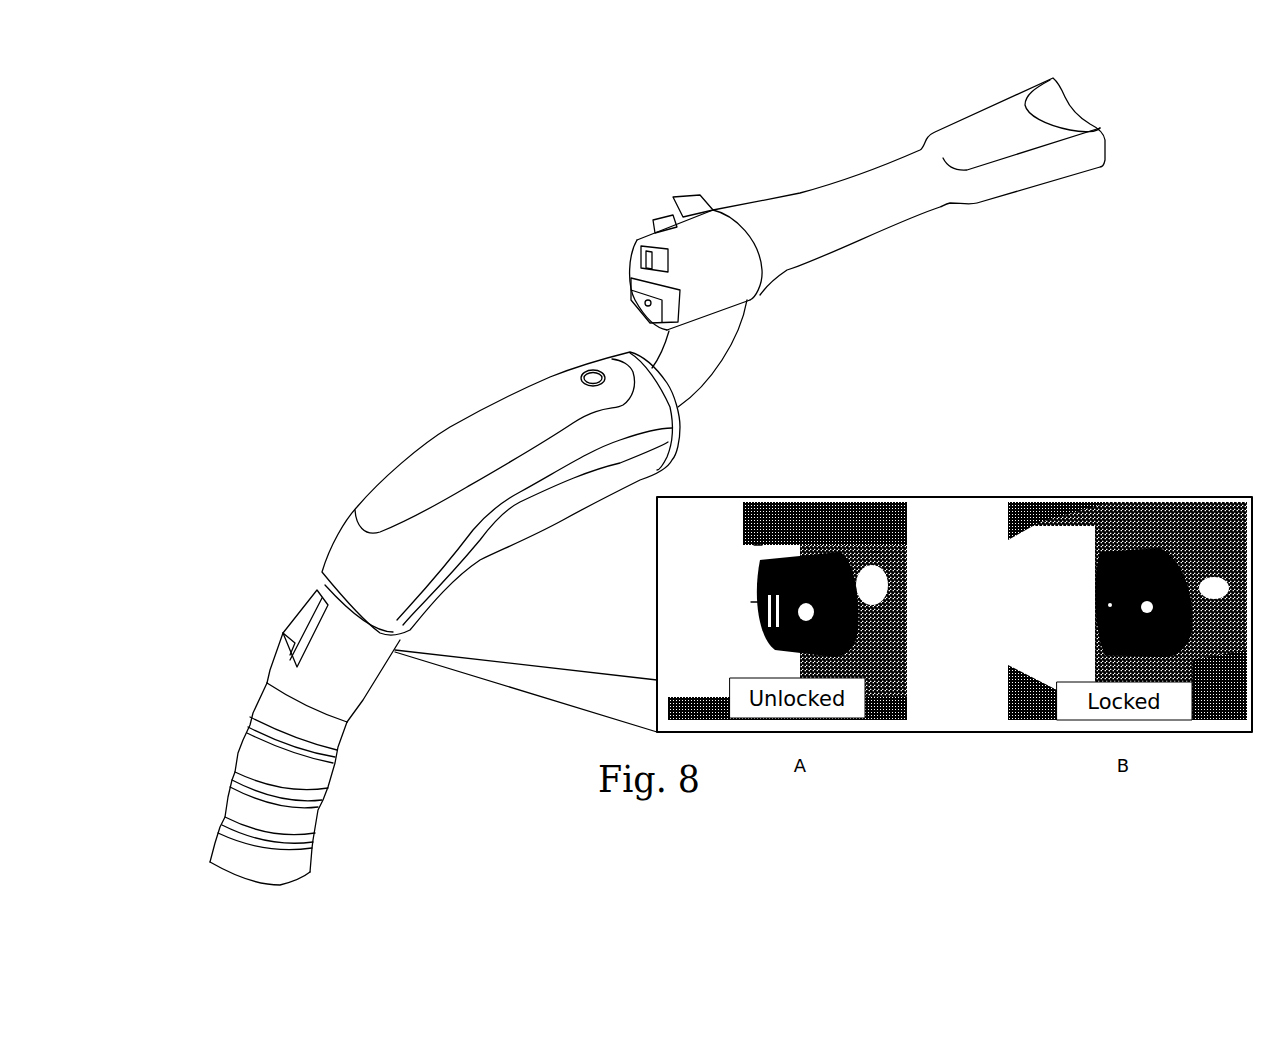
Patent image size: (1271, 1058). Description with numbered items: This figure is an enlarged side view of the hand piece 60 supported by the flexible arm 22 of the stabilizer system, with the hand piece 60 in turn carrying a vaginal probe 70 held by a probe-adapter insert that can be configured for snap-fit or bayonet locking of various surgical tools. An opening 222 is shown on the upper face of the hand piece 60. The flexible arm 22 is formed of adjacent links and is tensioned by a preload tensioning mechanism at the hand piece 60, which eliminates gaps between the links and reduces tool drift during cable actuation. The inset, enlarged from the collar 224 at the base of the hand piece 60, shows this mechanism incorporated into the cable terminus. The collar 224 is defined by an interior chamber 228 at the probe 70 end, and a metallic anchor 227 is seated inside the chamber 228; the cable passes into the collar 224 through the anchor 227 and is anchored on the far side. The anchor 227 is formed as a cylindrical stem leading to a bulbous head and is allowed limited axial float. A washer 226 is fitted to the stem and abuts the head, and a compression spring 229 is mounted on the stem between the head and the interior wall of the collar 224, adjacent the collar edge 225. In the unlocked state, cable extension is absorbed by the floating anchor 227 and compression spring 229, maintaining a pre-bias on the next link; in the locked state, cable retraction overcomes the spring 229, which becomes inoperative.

The flexible arm 22 is at (257, 693).
The hand piece 60 is at (427, 440).
The vaginal probe 70 is at (830, 187).
The handle aperture 222 is at (592, 370).
The collar 224 is at (380, 670).
The collar edge 225 is at (758, 545).
The washer 226 is at (795, 553).
The metallic anchor 227 is at (827, 570).
The interior chamber 228 is at (875, 552).
The compression spring 229 is at (755, 602).